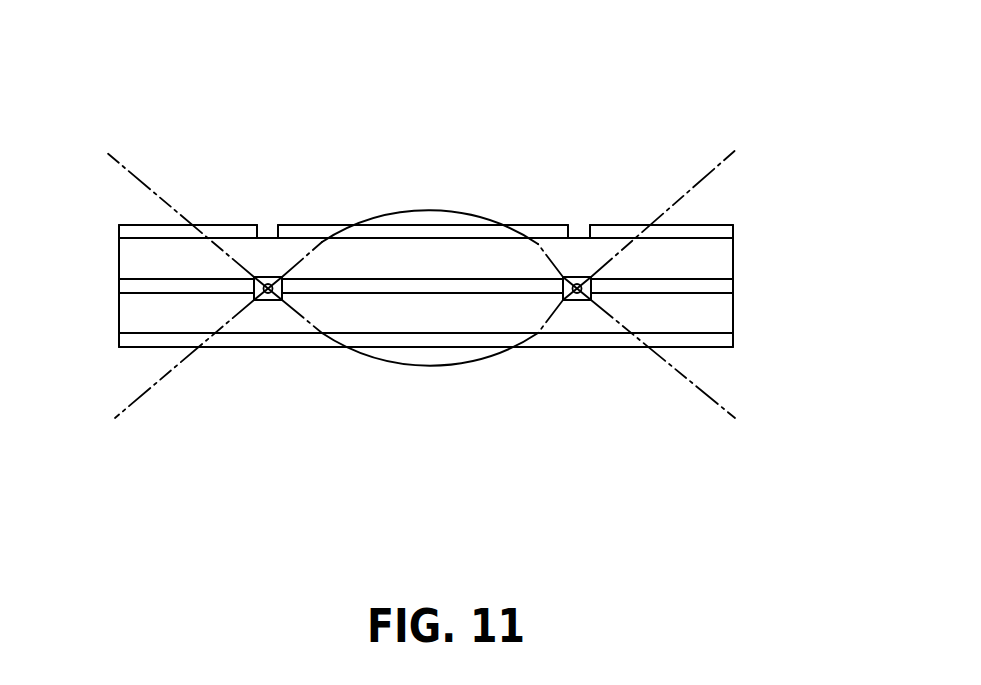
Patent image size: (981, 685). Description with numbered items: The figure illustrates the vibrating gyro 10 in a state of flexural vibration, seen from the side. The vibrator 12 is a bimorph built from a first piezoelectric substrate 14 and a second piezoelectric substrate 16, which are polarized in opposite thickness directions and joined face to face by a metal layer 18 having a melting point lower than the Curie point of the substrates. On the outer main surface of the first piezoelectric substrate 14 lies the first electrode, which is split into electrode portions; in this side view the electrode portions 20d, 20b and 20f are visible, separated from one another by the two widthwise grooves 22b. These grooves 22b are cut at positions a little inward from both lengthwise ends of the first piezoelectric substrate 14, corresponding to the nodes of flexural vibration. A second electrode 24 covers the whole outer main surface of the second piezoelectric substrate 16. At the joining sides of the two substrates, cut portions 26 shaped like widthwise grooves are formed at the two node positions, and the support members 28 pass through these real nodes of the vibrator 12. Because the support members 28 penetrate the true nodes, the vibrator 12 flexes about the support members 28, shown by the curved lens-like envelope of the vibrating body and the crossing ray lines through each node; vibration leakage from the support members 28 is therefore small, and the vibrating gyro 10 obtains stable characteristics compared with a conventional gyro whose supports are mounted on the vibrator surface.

The vibrating gyro 10 is at (145, 127).
The vibrator 12 is at (745, 208).
The first piezoelectric substrate 14 is at (712, 258).
The second piezoelectric substrate 16 is at (710, 313).
The metal layer 18 is at (722, 286).
The electrode portion 20b is at (533, 225).
The electrode portion 20d is at (233, 225).
The electrode portion 20f is at (620, 229).
The groove 22b is at (270, 224).
The second electrode 24 is at (718, 347).
The cut portion 26 is at (253, 308).
The support member 28 is at (266, 300).